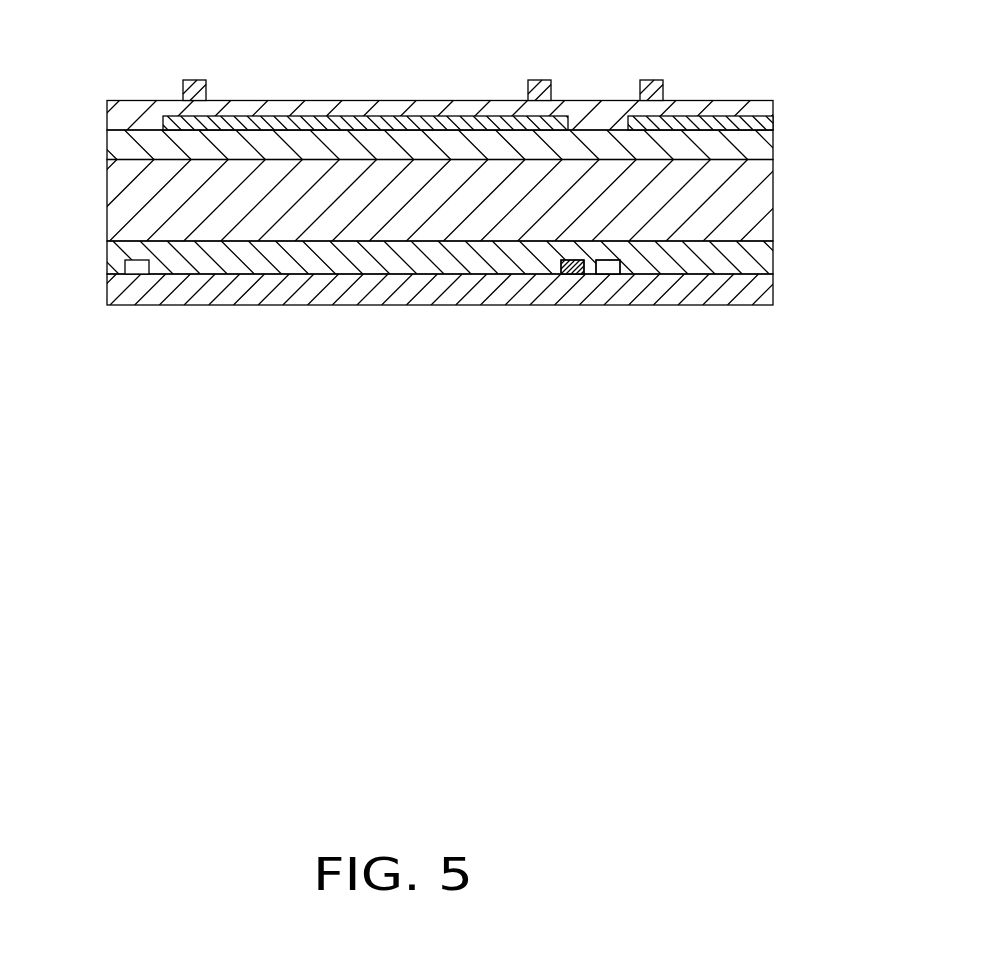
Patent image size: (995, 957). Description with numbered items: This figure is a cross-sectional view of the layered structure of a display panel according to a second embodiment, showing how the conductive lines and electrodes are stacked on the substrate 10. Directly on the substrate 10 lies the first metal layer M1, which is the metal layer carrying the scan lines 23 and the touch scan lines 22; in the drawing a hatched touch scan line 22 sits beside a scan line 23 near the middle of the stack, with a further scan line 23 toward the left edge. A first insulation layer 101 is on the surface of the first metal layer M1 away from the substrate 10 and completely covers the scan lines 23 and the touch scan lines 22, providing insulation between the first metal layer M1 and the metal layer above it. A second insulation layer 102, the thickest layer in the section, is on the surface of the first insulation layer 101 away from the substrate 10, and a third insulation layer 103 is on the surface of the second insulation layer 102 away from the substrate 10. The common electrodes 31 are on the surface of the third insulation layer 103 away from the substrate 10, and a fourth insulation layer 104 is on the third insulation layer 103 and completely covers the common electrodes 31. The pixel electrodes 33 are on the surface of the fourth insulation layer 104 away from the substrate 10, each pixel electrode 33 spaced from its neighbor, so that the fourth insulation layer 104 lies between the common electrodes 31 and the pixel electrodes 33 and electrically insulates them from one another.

The substrate 10 is at (116, 291).
The first insulation layer 101 is at (763, 262).
The second insulation layer 102 is at (765, 195).
The third insulation layer 103 is at (760, 152).
The fourth insulation layer 104 is at (745, 112).
The touch scan lines 22 is at (569, 269).
The scan lines 23 is at (139, 270).
The first metal layer M1 is at (641, 362).
The common electrodes 31 is at (295, 117).
The pixel electrodes 33 is at (195, 82).